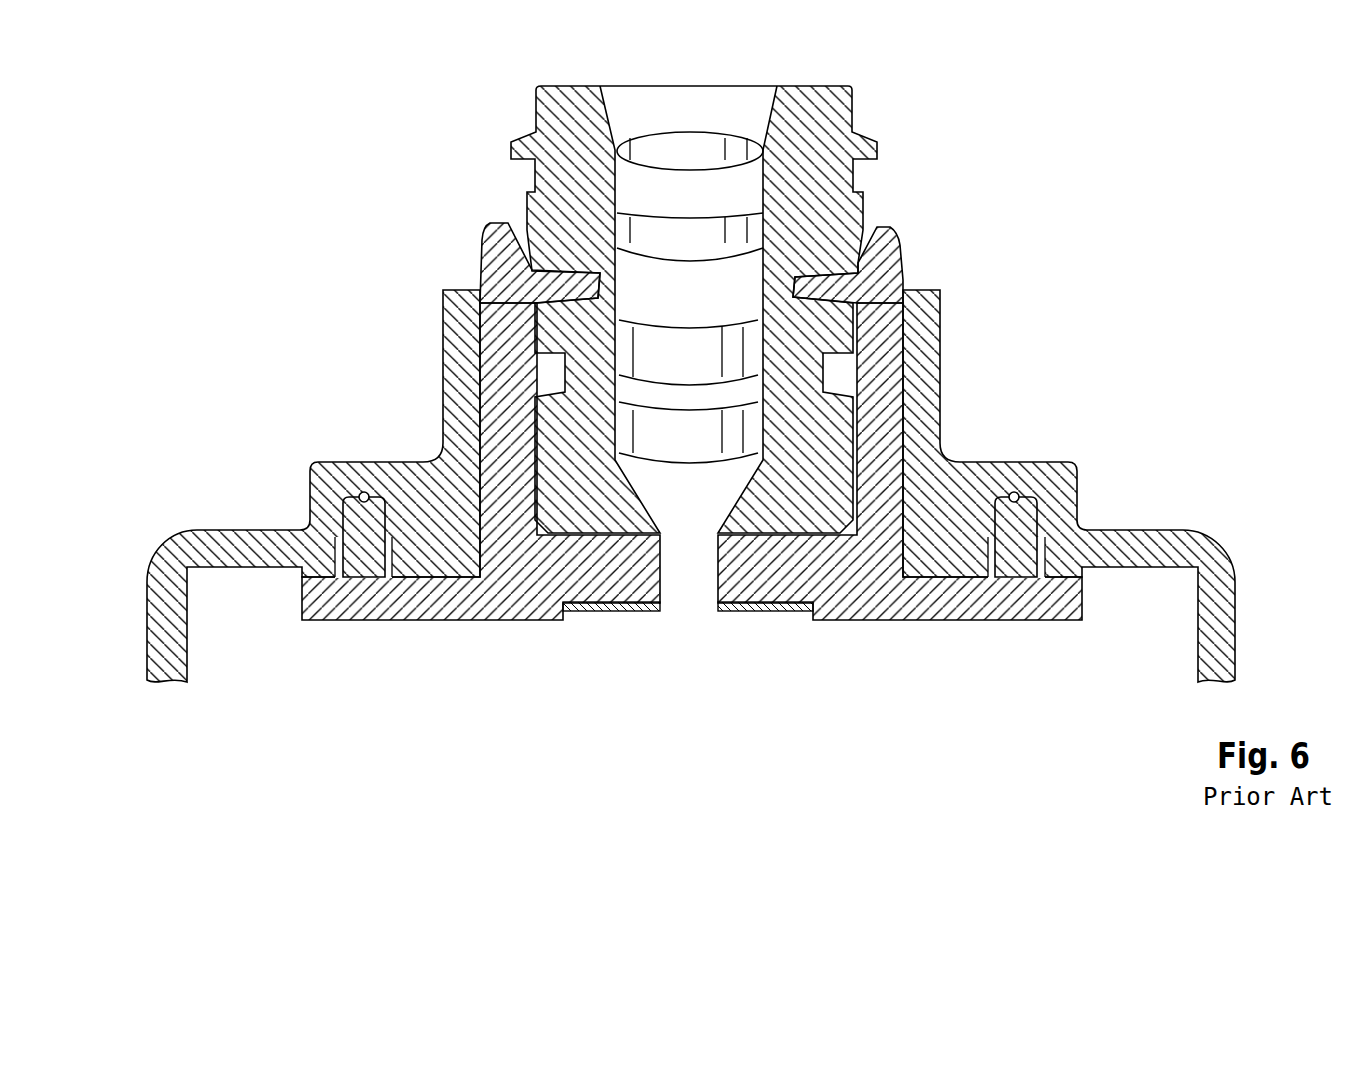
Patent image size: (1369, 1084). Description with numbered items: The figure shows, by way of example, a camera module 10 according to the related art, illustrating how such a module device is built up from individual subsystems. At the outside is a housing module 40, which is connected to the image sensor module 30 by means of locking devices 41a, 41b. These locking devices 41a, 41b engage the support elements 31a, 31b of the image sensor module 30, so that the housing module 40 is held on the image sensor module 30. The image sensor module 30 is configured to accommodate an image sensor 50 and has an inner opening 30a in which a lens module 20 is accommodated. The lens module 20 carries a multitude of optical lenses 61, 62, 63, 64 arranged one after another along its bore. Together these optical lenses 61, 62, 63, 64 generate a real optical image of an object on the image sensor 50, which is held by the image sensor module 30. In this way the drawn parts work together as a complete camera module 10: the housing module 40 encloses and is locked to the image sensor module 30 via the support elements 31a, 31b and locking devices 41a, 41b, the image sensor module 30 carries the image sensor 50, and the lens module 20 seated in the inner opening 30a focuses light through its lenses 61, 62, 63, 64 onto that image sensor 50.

The camera module 10 is at (404, 124).
The lens module 20 is at (867, 162).
The image sensor module 30 is at (877, 258).
The inner opening 30a is at (843, 326).
The support element 31a is at (360, 520).
The support element 31b is at (1015, 520).
The housing module 40 is at (165, 627).
The locking device 41a is at (360, 490).
The locking device 41b is at (1015, 490).
The image sensor 50 is at (800, 607).
The optical lens 61 is at (650, 142).
The optical lens 62 is at (656, 220).
The optical lens 63 is at (736, 355).
The optical lens 64 is at (668, 433).